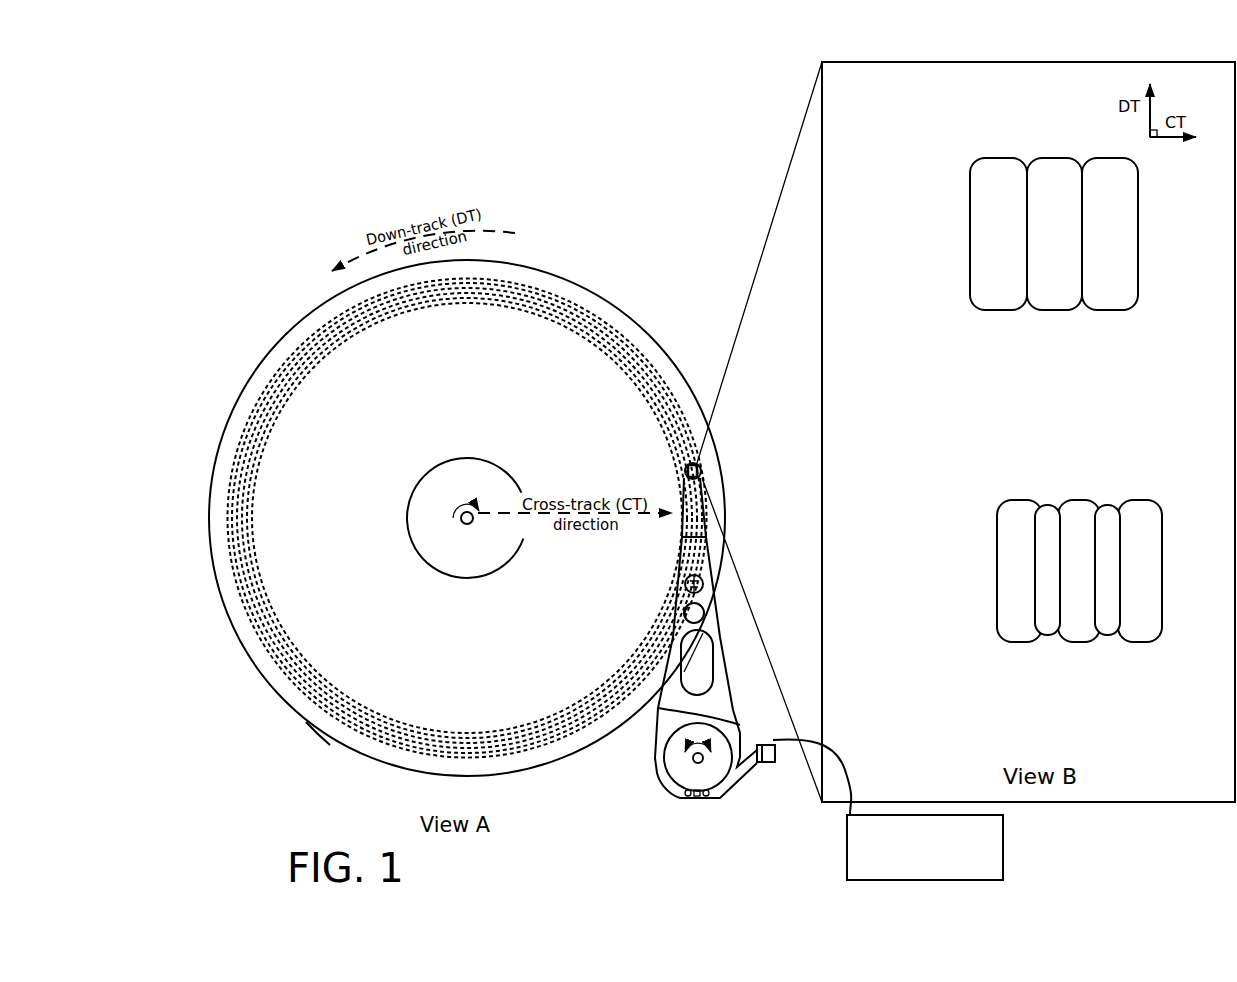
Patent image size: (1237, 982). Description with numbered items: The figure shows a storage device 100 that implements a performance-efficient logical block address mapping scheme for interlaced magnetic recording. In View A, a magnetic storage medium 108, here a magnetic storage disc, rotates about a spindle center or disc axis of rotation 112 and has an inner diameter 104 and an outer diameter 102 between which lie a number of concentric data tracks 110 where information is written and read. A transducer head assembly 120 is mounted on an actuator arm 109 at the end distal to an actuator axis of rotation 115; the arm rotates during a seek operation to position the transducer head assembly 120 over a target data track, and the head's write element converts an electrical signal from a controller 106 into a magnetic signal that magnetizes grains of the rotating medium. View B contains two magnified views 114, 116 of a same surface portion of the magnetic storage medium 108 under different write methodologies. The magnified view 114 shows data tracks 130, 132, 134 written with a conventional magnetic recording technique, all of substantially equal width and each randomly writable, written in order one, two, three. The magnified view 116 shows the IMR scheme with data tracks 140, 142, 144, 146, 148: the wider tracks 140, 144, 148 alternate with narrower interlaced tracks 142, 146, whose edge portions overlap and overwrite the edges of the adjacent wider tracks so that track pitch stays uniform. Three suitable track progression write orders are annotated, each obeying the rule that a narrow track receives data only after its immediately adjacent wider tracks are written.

The storage device 100 is at (298, 163).
The outer diameter 102 is at (290, 327).
The inner diameter 104 is at (407, 522).
The controller 106 is at (888, 809).
The magnetic storage medium 108 is at (306, 722).
The actuator arm 109 is at (718, 632).
The data tracks 110 is at (265, 651).
The disc axis of rotation 112 is at (457, 512).
The magnified view 114 is at (911, 192).
The actuator axis of rotation 115 is at (693, 759).
The magnified view 116 is at (918, 491).
The transducer head assembly 120 is at (700, 472).
The data track 130 is at (998, 234).
The data track 132 is at (1054, 234).
The data track 134 is at (1110, 234).
The data track 140 is at (1002, 502).
The data track 142 is at (1047, 505).
The data track 144 is at (1075, 500).
The data track 146 is at (1108, 505).
The data track 148 is at (1140, 500).